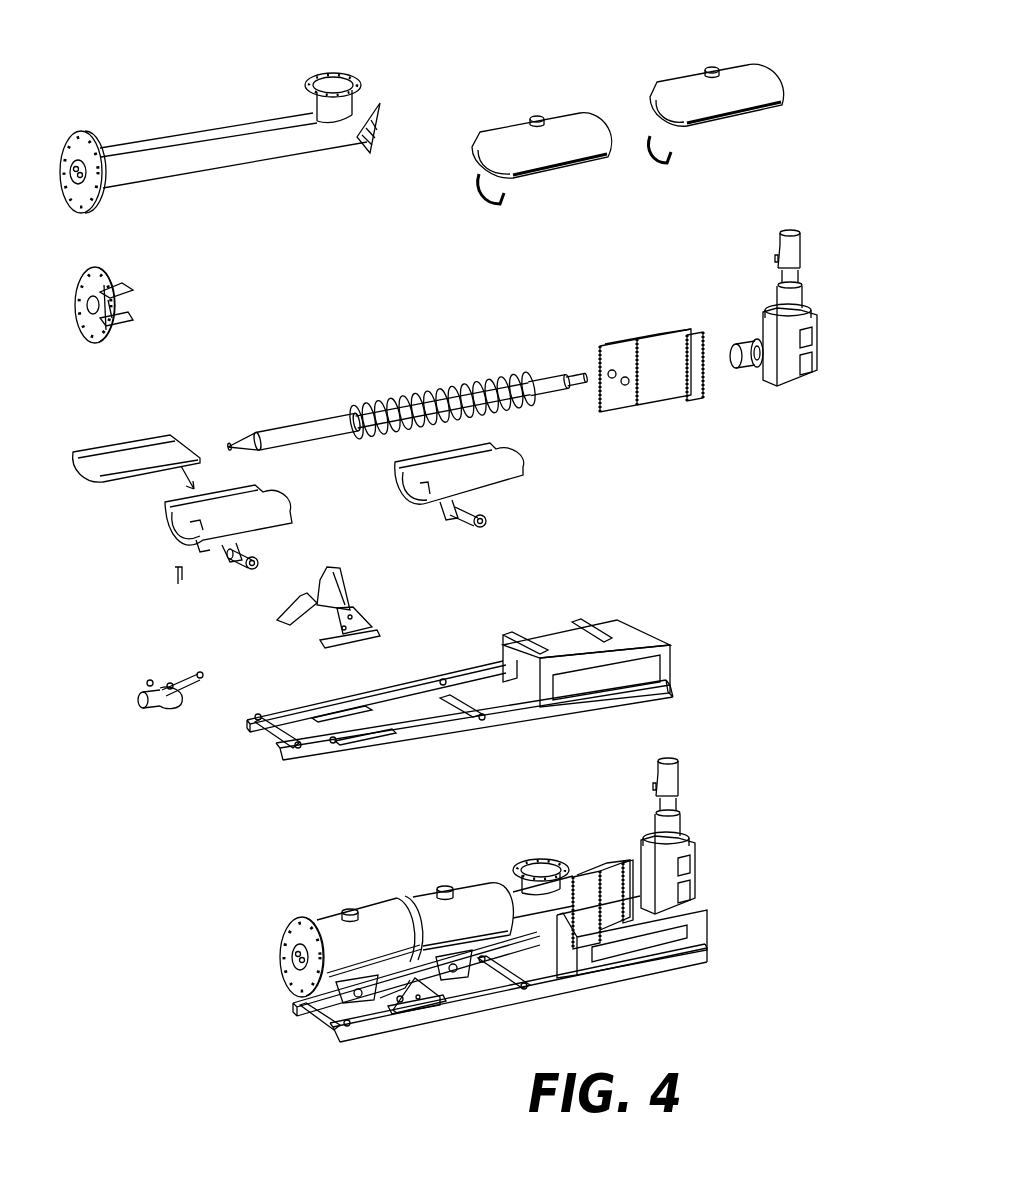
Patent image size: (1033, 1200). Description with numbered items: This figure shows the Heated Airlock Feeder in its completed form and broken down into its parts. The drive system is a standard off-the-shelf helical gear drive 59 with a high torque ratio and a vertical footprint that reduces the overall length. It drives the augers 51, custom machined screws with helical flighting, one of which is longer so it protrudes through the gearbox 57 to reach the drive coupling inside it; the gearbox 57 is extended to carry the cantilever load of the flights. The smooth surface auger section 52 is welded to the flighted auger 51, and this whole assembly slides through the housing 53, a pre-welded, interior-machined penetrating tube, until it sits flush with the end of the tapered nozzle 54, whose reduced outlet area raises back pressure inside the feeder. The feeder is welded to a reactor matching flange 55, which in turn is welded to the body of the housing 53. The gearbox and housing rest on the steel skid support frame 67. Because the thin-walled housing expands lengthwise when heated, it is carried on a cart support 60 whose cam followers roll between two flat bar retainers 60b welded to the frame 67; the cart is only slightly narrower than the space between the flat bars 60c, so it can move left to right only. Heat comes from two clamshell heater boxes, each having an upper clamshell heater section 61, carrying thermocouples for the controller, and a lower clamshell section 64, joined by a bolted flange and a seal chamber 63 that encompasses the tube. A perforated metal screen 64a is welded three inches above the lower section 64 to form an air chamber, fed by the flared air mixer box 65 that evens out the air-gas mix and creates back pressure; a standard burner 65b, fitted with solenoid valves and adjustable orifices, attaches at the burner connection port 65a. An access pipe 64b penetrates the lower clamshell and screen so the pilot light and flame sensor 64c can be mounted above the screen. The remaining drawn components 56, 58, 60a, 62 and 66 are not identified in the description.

The auger 51 is at (456, 393).
The smooth surface auger section 52 is at (330, 430).
The housing (penetrating tube) 53 is at (252, 116).
The nozzle 54 is at (128, 320).
The reactor matching flange 55 is at (88, 142).
The inlet flange 56 is at (345, 79).
The gearbox 57 is at (673, 396).
The coupling 58 is at (745, 342).
The helical gear drive 59 is at (783, 290).
The cart support 60 is at (342, 590).
The bracket plate 60a is at (355, 619).
The flat bar retainers 60b is at (390, 632).
The flat bars 60c is at (320, 648).
The upper clamshell heater section 61 is at (515, 128).
The cover nozzle 62 is at (712, 69).
The seal chamber 63 is at (478, 180).
The lower clamshell section 64 is at (268, 527).
The perforated metal screen 64a is at (95, 450).
The access pipe 64b is at (196, 552).
The pilot light and flame sensor 64c is at (175, 577).
The air mixer box 65 is at (233, 565).
The burner connection port 65a is at (252, 570).
The burner 65b is at (185, 715).
The housing 66 is at (633, 633).
The support frame 67 is at (640, 703).